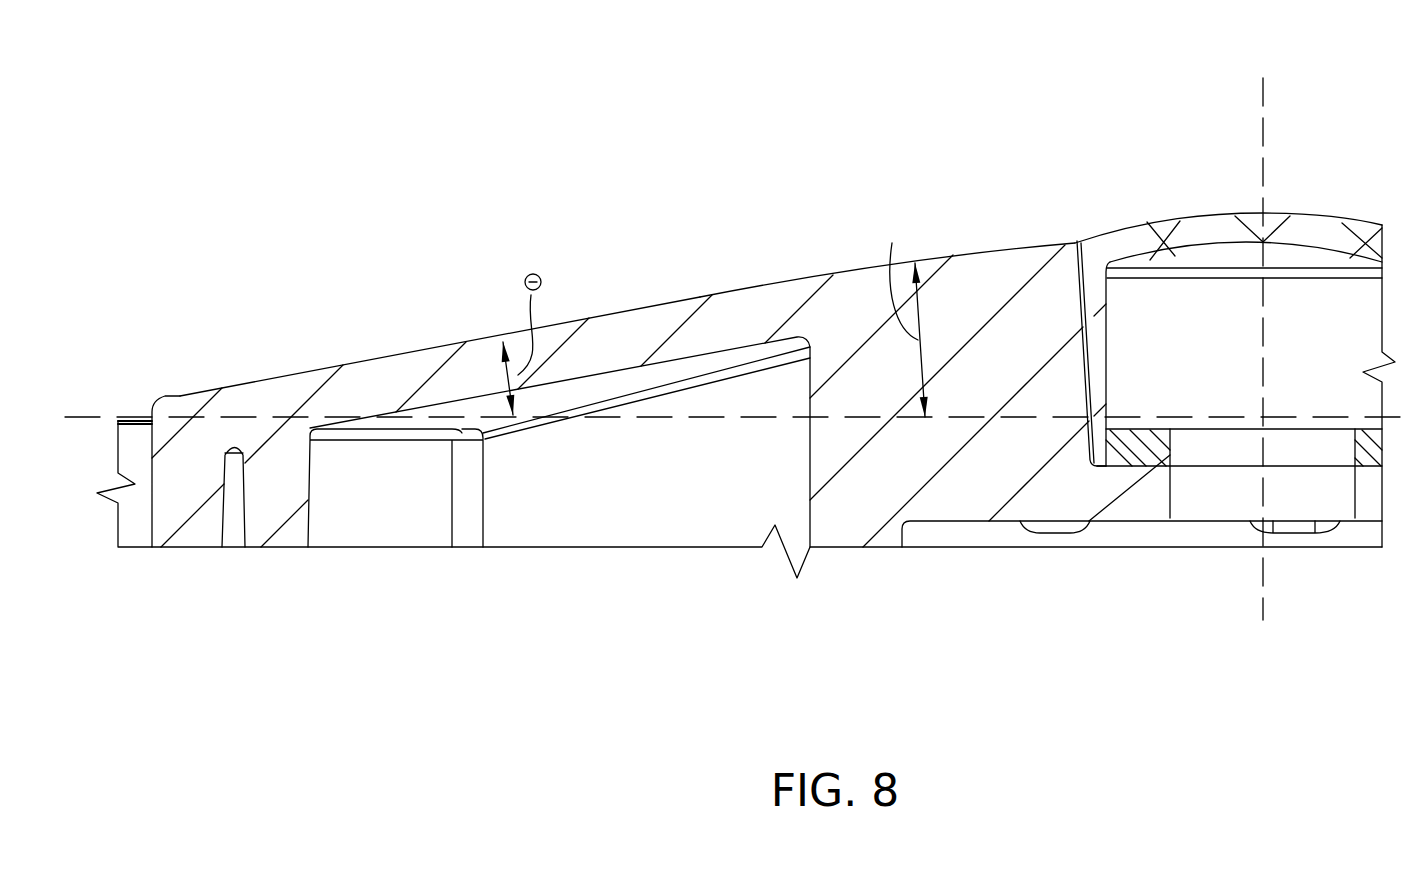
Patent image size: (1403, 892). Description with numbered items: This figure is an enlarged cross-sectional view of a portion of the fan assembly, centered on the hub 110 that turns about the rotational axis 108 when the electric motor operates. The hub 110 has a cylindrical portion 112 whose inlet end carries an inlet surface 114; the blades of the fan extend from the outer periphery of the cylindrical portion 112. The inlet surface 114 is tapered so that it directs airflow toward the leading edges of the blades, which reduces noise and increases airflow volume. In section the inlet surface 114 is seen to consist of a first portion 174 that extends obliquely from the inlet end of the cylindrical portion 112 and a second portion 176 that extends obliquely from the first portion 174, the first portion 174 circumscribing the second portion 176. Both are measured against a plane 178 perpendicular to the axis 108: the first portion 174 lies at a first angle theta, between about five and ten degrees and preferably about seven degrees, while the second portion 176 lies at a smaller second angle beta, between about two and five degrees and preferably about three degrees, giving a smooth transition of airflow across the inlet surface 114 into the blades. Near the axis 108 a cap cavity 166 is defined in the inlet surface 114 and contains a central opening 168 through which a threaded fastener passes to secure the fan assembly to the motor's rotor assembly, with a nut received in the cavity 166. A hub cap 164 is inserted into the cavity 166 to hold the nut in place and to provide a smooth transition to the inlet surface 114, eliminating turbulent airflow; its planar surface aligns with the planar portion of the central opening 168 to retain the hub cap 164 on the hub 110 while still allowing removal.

The rotational axis 108 is at (1263, 130).
The hub 110 is at (235, 235).
The cylindrical portion 112 is at (175, 517).
The inlet surface 114 is at (272, 375).
The hub cap 164 is at (1195, 233).
The cap cavity 166 is at (1077, 337).
The central opening 168 is at (1170, 455).
The first portion 174 is at (425, 353).
The second portion 176 is at (962, 258).
The plane 178 is at (88, 410).